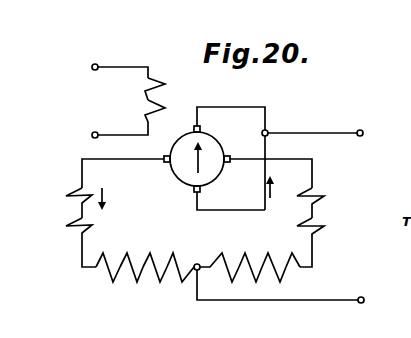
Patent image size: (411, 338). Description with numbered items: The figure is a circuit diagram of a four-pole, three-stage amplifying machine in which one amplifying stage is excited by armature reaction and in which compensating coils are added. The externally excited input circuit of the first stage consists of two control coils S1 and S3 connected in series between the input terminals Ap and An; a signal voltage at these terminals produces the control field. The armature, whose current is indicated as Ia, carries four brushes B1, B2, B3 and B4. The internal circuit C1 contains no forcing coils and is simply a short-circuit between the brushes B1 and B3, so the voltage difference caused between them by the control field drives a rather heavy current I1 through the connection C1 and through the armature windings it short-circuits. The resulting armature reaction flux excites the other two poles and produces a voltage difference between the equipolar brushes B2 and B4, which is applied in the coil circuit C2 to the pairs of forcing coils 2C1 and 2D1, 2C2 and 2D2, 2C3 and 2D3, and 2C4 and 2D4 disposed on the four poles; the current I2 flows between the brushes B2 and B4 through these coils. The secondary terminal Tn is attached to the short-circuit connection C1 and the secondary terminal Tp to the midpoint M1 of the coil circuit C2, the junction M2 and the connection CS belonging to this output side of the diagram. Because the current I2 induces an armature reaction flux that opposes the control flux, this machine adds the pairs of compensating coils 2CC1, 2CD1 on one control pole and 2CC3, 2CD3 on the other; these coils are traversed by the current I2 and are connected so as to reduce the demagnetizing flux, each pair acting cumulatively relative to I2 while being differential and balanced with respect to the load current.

The input terminal Ap is at (103, 69).
The input terminal An is at (92, 135).
The control coil S1 is at (145, 88).
The control coil S3 is at (145, 113).
The brush B1 is at (201, 128).
The brush B2 is at (268, 172).
The brush B3 is at (192, 190).
The brush B4 is at (126, 172).
The armature current Ia is at (197, 159).
The midpoint of coil circuit M1 is at (262, 133).
The midpoint M2 is at (195, 260).
The internal circuit C1 is at (265, 113).
The coil circuit C2 is at (312, 180).
The secondary connection CS is at (345, 130).
The secondary terminal Tn is at (372, 133).
The secondary terminal Tp is at (373, 301).
The current I1 is at (270, 196).
The current I2 is at (102, 197).
The compensating coil 2CC1 is at (64, 198).
The compensating coil 2CC3 is at (64, 228).
The compensating coil 2CD1 is at (326, 200).
The compensating coil 2CD3 is at (326, 230).
The forcing coil 2D1 is at (102, 286).
The forcing coil 2D2 is at (186, 247).
The forcing coil 2D3 is at (135, 275).
The forcing coil 2D4 is at (132, 247).
The forcing coil 2C1 is at (212, 282).
The forcing coil 2C2 is at (303, 254).
The forcing coil 2C3 is at (254, 275).
The forcing coil 2C4 is at (226, 259).